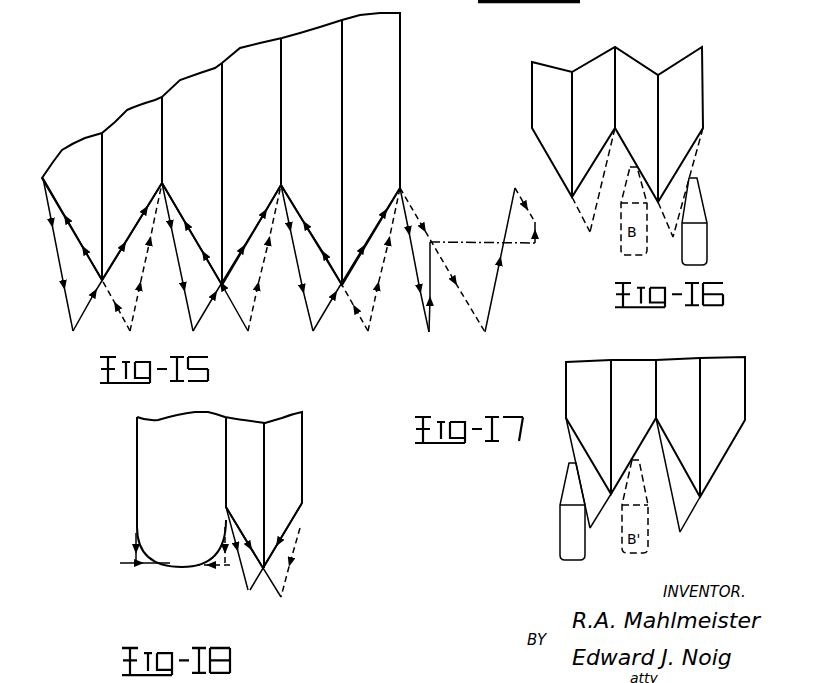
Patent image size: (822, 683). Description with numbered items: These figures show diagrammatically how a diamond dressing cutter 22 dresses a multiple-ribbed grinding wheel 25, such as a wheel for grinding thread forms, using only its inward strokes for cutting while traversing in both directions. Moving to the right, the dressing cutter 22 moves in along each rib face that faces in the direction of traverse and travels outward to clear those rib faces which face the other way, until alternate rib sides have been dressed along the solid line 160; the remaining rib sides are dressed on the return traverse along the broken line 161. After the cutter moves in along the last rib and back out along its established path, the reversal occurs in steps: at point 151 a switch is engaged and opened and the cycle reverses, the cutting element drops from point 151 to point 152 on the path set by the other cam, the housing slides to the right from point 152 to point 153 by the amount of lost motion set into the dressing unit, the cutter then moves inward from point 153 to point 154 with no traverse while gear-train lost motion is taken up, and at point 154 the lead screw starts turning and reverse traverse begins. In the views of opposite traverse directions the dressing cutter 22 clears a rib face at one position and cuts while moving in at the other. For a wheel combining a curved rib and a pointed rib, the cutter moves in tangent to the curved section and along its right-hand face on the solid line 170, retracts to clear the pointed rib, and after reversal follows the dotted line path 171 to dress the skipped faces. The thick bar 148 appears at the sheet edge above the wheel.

In FIG. 15, the light transmitting member with V-shaped grooves 25 is at (393, 98).
In FIG. 16, the light transmitting member with V-shaped grooves 25 is at (700, 101).
In FIG. 17, the light transmitting member with V-shaped grooves 25 is at (745, 398).
In FIG. 18, the light transmitting member with V-shaped grooves 25 is at (300, 458).
In FIG. 16, the dressing cutter 22 is at (697, 184).
In FIG. 17, the dressing cutter 22 is at (569, 463).
In FIG. 15, the light source 148 is at (510, 2).
In FIG. 15, the point 151 is at (429, 333).
In FIG. 15, the point 152 is at (432, 242).
In FIG. 15, the point 153 is at (535, 246).
In FIG. 15, the point 154 is at (538, 223).
In FIG. 15, the solid line 160 is at (320, 248).
In FIG. 15, the broken line 161 is at (385, 268).
In FIG. 18, the solid line 170 is at (242, 571).
In FIG. 18, the dotted line path 171 is at (292, 562).